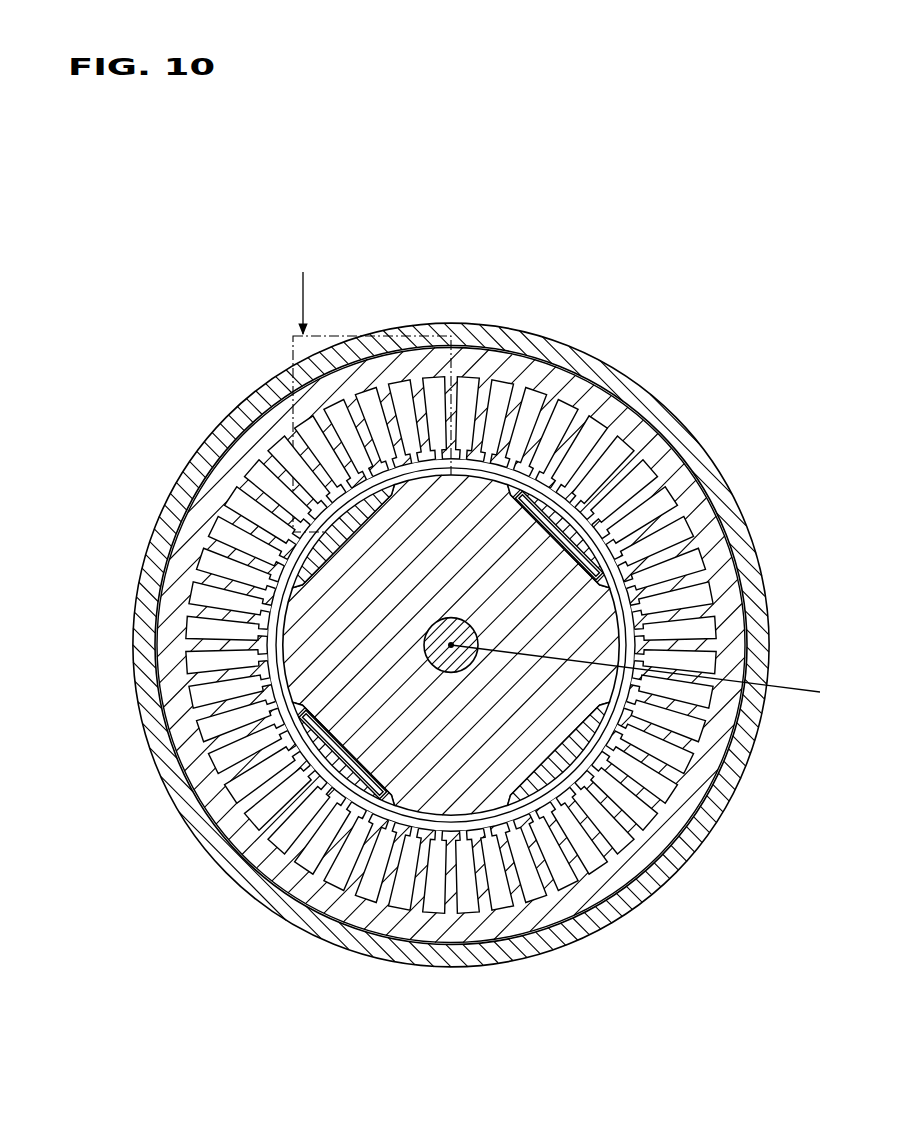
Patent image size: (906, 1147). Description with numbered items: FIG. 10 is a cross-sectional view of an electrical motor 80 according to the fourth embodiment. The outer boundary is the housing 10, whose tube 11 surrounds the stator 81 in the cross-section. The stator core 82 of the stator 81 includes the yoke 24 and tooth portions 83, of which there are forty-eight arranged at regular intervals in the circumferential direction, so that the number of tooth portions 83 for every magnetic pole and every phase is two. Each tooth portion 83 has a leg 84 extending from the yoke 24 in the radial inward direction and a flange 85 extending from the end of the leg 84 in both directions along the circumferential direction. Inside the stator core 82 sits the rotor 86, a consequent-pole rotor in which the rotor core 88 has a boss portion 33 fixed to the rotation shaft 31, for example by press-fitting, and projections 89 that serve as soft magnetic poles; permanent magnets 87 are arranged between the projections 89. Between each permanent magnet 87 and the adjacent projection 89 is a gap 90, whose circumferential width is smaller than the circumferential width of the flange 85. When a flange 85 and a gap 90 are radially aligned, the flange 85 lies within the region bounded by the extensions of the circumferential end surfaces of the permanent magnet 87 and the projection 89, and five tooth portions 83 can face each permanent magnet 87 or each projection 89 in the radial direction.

The motor 80 is at (208, 372).
The housing 10 is at (176, 476).
The tube 11 is at (165, 517).
The stator 81 is at (720, 505).
The stator core 82 is at (413, 252).
The yoke 24 is at (350, 382).
The tooth portion 83 is at (435, 285).
The leg 84 is at (386, 466).
The flange 85 is at (384, 474).
The rotor 86 is at (658, 590).
The permanent magnet 87 is at (270, 571).
The gap 90 is at (531, 460).
The rotor core 88 is at (412, 1020).
The boss portion 33 is at (432, 720).
The projection 89 is at (476, 474).
The rotation shaft 31 is at (470, 644).